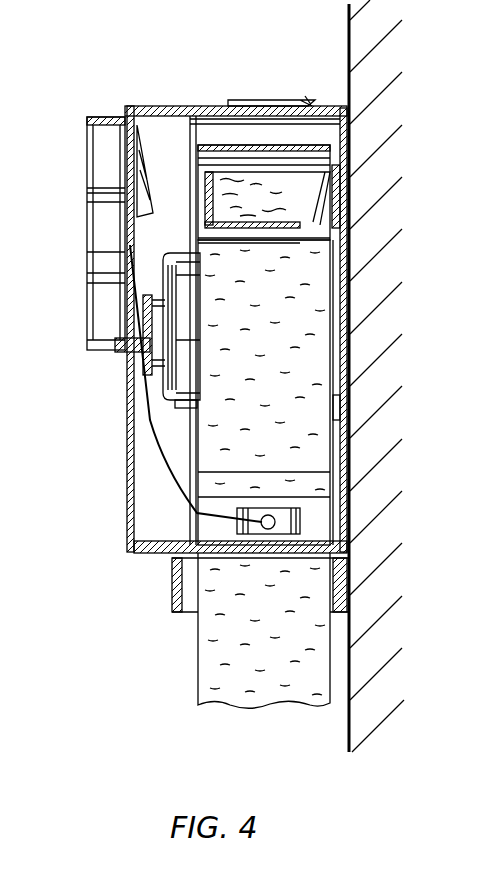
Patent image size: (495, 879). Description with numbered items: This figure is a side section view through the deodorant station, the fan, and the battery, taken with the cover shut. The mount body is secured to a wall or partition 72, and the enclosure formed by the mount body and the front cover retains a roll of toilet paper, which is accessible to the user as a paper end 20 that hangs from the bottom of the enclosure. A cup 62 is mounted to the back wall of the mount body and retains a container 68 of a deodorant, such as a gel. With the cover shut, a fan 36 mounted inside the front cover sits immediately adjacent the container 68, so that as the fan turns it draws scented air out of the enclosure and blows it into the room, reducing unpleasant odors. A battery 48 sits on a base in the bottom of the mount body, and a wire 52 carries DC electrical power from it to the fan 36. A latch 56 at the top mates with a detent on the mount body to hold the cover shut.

The paper end 20 is at (205, 670).
The fan 36 is at (133, 160).
The battery 48 is at (268, 515).
The wire 52 is at (160, 462).
The latch 56 is at (310, 100).
The cup 62 is at (336, 212).
The container 68 is at (340, 170).
The wall 72 is at (346, 732).